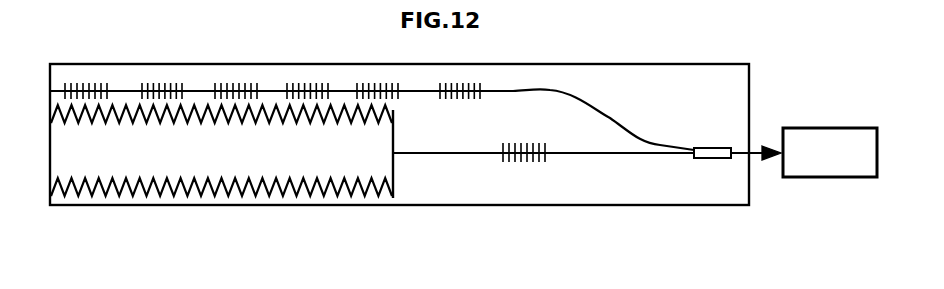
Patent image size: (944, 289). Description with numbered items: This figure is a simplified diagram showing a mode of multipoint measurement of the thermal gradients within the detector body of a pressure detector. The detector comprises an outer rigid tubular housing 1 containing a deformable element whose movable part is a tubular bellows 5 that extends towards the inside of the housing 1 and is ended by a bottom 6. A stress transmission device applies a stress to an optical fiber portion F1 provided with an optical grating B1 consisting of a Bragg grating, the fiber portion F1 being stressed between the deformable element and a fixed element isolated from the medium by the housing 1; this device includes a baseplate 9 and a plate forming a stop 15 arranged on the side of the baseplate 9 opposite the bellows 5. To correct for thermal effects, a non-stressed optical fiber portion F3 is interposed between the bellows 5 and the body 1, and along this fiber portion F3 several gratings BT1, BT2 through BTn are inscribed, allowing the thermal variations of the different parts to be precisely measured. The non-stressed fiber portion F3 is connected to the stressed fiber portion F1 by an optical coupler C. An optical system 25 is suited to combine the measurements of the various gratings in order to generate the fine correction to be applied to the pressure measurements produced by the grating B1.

The outer rigid tubular housing 1 is at (124, 206).
The tubular bellows 5 is at (277, 194).
The bottom 6 is at (397, 157).
The baseplate 9 is at (787, 98).
The stop plate 15 is at (756, 147).
The optical system 25 is at (830, 152).
The grating BT1 is at (94, 85).
The grating BT2 is at (167, 83).
The grating BTn is at (480, 83).
The optical grating B1 is at (524, 140).
The optical fiber portion F1 is at (582, 153).
The non-stressed optical fiber portion F3 is at (550, 90).
The optical coupler C is at (712, 139).